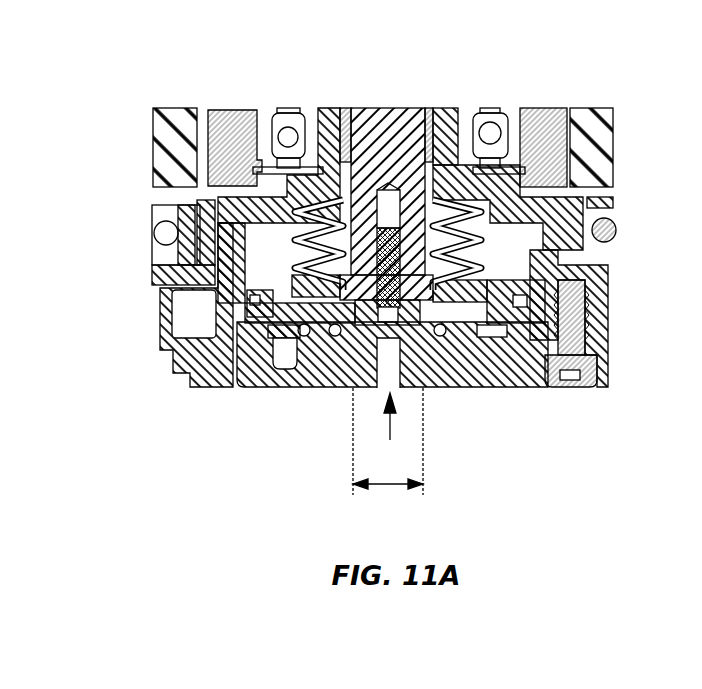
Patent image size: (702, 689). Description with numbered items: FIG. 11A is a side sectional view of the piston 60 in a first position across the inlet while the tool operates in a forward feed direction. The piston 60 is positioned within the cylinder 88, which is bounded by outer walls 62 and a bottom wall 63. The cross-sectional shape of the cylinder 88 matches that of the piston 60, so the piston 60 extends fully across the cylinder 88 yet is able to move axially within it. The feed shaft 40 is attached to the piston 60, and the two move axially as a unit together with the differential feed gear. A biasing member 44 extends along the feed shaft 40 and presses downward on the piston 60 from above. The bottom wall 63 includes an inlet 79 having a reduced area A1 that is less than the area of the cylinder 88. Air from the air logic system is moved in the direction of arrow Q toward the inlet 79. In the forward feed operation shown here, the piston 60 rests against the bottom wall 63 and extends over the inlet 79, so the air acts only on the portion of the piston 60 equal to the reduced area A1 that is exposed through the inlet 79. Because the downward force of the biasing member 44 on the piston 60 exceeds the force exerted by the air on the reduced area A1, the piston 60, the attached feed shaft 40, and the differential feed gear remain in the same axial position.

The feed shaft 40 is at (397, 135).
The biasing member 44 is at (462, 247).
The cylinder 88 is at (268, 247).
The outer walls 62 is at (540, 258).
The piston 60 is at (268, 322).
The inlet 79 is at (386, 357).
The bottom wall 63 is at (445, 358).
The arrow Q is at (392, 430).
The reduced area A1 is at (388, 441).